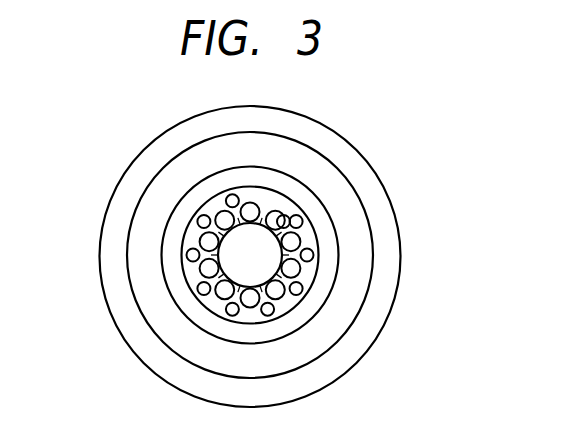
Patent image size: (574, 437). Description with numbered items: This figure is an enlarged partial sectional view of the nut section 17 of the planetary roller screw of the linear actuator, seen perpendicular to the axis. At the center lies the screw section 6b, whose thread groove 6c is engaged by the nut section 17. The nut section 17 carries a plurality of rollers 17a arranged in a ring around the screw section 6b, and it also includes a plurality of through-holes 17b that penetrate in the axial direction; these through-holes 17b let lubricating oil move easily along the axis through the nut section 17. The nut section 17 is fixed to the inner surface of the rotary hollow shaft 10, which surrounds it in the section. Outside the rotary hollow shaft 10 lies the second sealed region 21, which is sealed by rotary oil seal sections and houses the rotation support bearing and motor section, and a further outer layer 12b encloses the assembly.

The screw section 6b is at (265, 268).
The thread groove 6c is at (284, 232).
The rotary hollow shaft 10 is at (332, 247).
The outer jacket layer 12b is at (363, 177).
The nut section 17 is at (310, 273).
The rollers 17a is at (205, 238).
The through-holes 17b is at (192, 257).
The second sealed region 21 is at (355, 215).